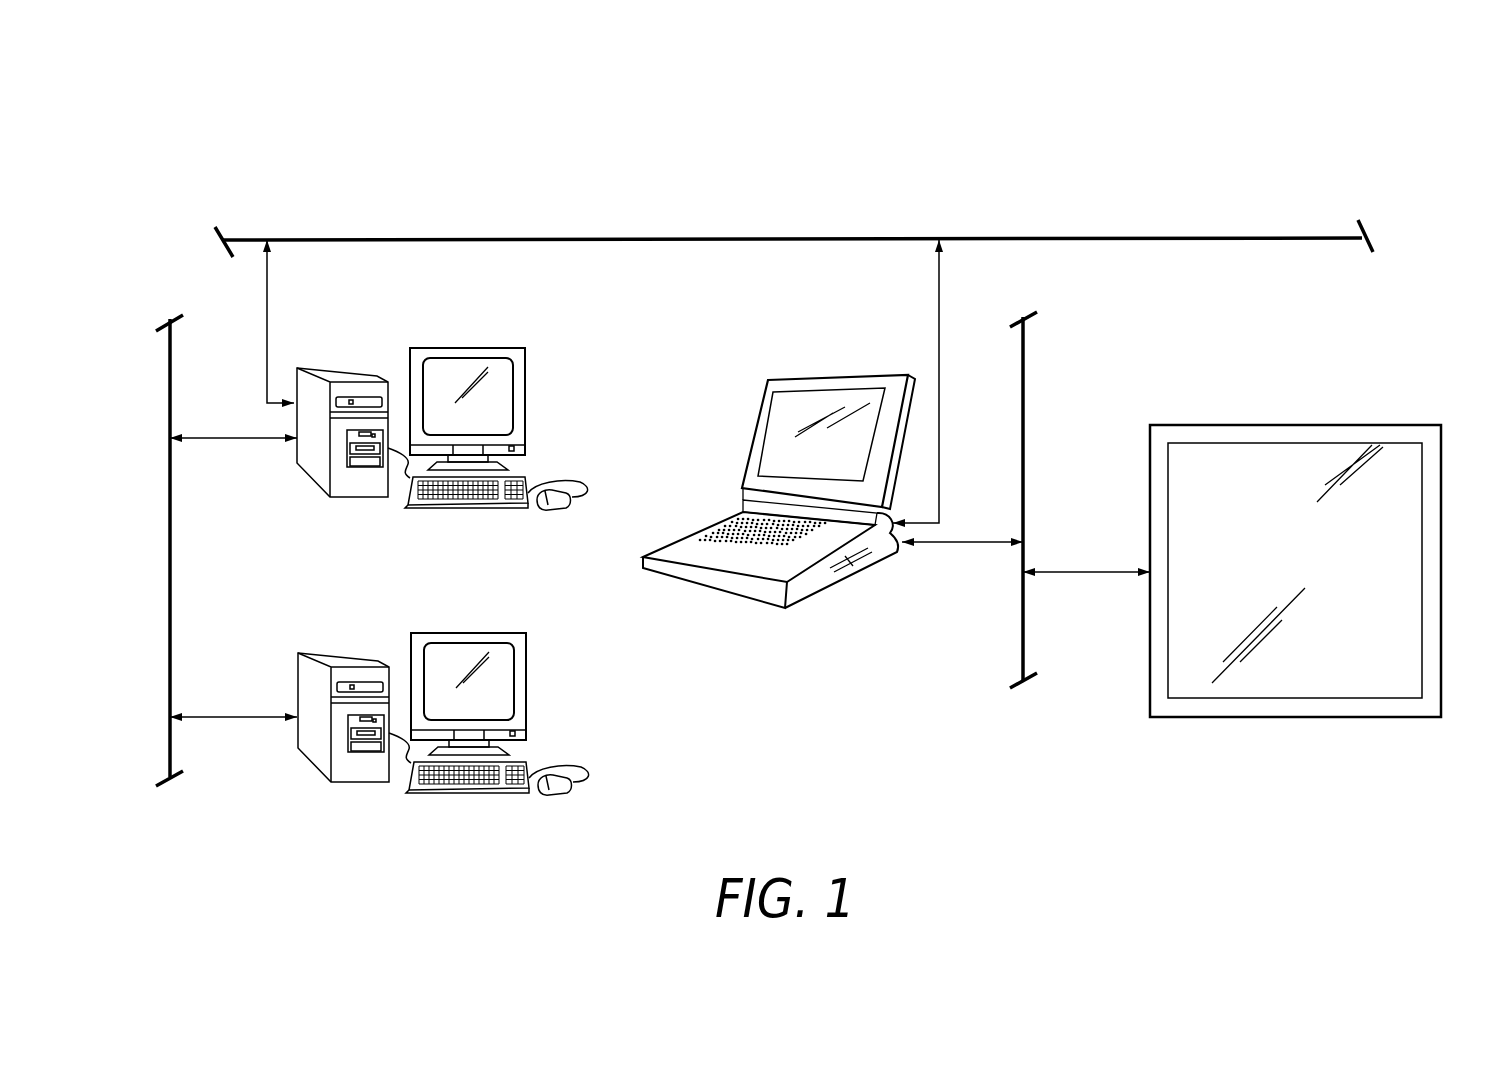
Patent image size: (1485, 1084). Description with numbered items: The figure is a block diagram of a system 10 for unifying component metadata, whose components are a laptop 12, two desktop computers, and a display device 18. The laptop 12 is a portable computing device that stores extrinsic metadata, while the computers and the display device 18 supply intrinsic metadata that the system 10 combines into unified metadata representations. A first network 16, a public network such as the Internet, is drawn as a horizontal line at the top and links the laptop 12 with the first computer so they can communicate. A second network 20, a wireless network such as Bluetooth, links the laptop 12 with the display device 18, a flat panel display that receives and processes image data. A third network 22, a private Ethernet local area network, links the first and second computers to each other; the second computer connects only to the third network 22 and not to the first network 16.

The system for unifying component metadata 10 is at (947, 166).
The laptop 12 is at (748, 438).
The first network 16 is at (428, 240).
The display device 18 is at (1293, 425).
The second network 20 is at (1023, 428).
The third network 22 is at (168, 395).